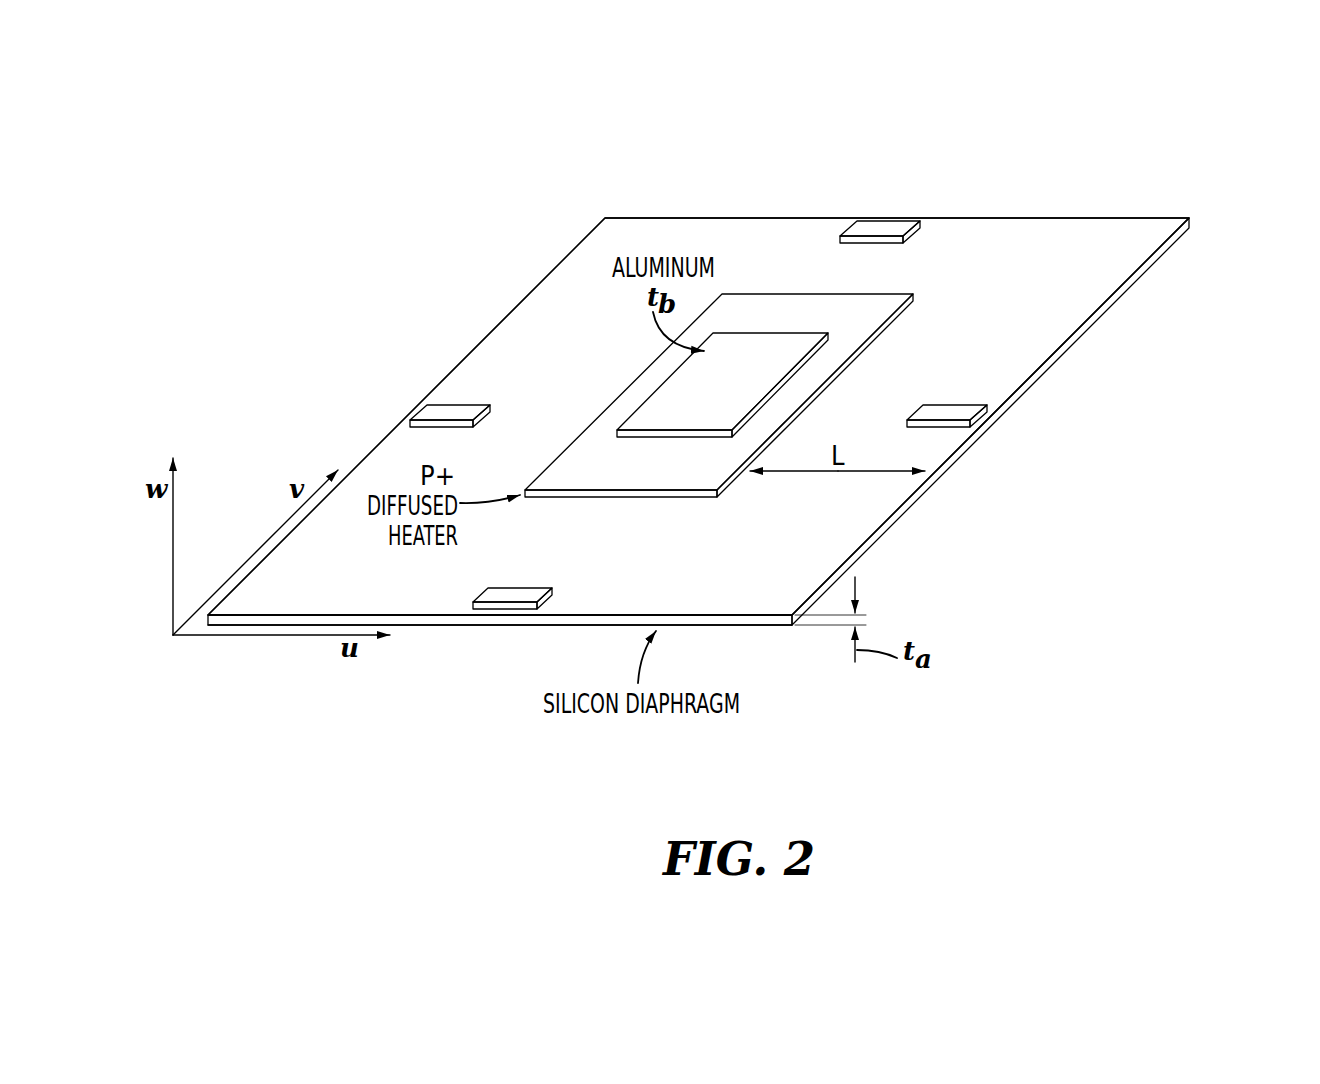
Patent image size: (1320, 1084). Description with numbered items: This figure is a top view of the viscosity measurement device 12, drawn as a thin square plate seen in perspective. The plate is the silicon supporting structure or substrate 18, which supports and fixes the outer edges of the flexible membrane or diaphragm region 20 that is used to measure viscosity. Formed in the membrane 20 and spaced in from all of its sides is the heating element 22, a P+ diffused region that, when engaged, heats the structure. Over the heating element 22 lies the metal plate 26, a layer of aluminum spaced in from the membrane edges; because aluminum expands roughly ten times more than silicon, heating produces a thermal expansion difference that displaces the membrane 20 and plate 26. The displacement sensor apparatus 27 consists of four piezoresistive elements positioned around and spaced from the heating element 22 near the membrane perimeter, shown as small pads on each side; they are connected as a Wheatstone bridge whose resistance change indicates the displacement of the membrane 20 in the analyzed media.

The viscosity measurement device 12 is at (1162, 472).
The supporting structure or substrate 18 is at (912, 526).
The membrane or diaphragm region 20 is at (1038, 290).
The heating element 22 is at (651, 478).
The metal plate 26 is at (738, 393).
The displacement sensor apparatus 27 is at (489, 631).